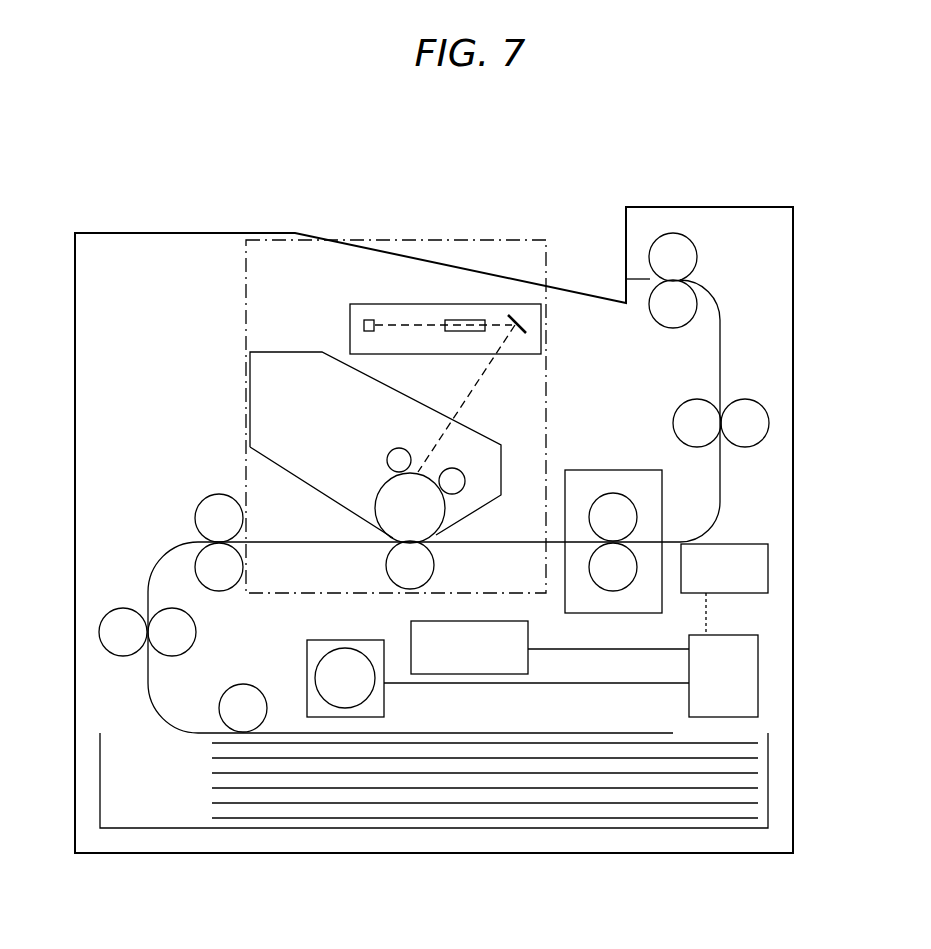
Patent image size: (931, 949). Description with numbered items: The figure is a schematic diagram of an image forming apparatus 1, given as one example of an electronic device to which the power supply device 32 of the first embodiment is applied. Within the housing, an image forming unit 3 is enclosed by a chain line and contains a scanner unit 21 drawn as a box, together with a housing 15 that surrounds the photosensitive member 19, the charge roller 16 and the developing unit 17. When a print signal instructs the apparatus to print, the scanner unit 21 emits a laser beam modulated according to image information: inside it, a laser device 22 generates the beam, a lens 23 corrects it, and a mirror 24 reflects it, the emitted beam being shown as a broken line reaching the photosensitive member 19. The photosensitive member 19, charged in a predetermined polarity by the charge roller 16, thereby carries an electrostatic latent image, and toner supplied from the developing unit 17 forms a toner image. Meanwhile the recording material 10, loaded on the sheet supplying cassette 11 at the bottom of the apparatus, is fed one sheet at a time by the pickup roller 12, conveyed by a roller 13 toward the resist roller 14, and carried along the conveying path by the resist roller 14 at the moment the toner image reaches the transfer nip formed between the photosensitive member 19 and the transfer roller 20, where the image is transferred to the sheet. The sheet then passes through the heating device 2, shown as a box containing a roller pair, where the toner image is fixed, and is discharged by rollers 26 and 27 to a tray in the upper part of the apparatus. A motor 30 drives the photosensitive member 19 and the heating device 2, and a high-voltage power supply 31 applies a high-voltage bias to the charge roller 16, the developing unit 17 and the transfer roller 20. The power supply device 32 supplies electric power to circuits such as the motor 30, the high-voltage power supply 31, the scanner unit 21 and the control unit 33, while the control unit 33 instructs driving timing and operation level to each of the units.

The image forming apparatus 1 is at (756, 207).
The heating device 2 is at (614, 470).
The image forming unit 3 is at (246, 396).
The recording material 10 is at (611, 740).
The sheet supplying cassette 11 is at (768, 776).
The pickup roller 12 is at (222, 694).
The roller 13 is at (123, 657).
The resist roller 14 is at (218, 493).
The process cartridge housing 15 is at (274, 352).
The charge roller 16 is at (392, 448).
The developing unit 17 is at (460, 468).
The photosensitive member 19 is at (376, 495).
The transfer roller 20 is at (436, 566).
The scanner unit 21 is at (350, 327).
The laser device 22 is at (369, 319).
The lens 23 is at (449, 319).
The mirror 24 is at (516, 335).
The roller 26 is at (684, 404).
The roller 27 is at (698, 257).
The motor 30 is at (307, 668).
The high-voltage power supply 31 is at (530, 633).
The power supply device 32 is at (727, 635).
The control unit 33 is at (725, 544).